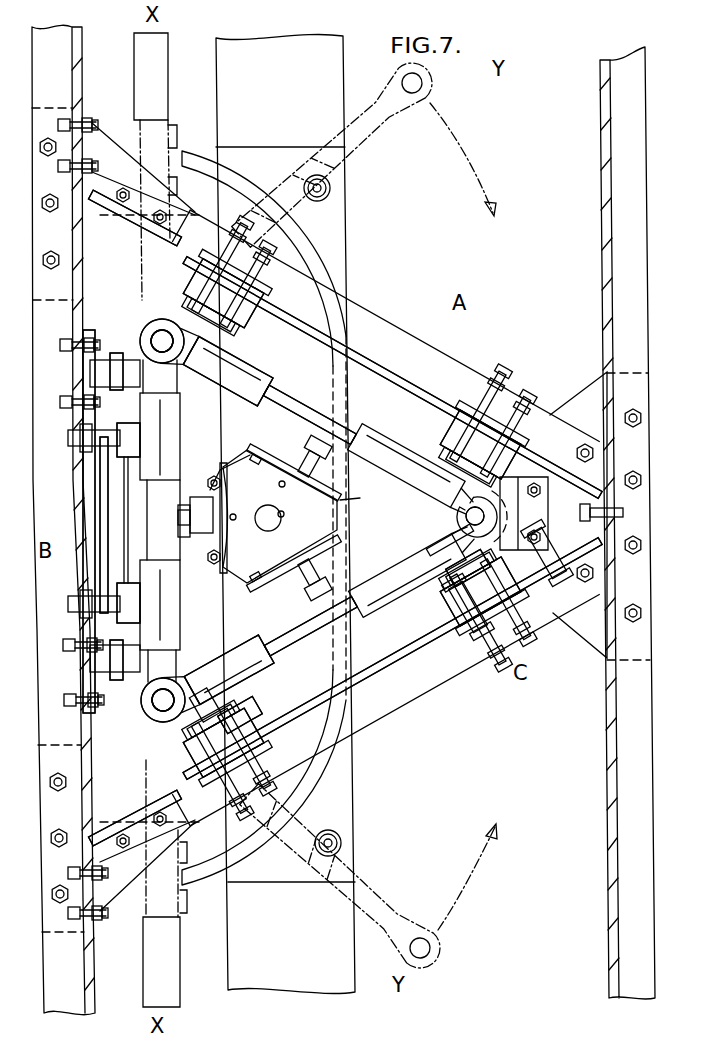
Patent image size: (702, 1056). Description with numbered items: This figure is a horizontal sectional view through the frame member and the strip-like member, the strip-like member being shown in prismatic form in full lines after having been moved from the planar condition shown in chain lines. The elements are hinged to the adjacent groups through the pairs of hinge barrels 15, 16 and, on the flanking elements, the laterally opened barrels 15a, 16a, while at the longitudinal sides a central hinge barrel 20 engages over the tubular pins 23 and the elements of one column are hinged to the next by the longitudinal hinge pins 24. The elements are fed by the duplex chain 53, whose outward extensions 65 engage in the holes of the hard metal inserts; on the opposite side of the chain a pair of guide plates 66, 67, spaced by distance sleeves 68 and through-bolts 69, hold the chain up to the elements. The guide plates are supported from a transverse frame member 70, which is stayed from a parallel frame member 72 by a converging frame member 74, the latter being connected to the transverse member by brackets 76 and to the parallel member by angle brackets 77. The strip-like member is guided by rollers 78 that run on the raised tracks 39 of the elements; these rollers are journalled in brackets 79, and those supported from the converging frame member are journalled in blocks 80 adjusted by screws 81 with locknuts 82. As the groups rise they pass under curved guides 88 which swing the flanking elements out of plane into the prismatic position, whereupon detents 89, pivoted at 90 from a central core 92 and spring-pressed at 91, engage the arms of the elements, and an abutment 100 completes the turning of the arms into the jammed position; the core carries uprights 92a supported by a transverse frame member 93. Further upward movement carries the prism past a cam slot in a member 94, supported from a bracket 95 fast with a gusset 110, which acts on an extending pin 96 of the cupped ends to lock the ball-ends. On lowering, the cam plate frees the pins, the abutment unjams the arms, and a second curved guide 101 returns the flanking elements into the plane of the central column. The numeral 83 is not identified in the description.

The hinge barrel 15 is at (160, 460).
The hinge barrel of flanking element 15a is at (400, 458).
The hinge barrel 16 is at (182, 637).
The hinge barrel of flanking element 16a is at (230, 386).
The central hinge barrel 20 is at (455, 518).
The tubular pin 23 is at (468, 508).
The hinge pin 24 is at (150, 342).
The raised tracks 39 is at (468, 534).
The chain 53 is at (125, 560).
The outward extensions 65 is at (140, 449).
The guide plate 66 is at (70, 431).
The guide plate 67 is at (80, 614).
The distance sleeves 68 is at (86, 470).
The through-bolts 69 is at (101, 502).
The transverse frame member 70 is at (56, 60).
The parallel frame member 72 is at (625, 733).
The converging frame member 74 is at (440, 364).
The brackets 76 is at (88, 118).
The angle brackets 77 is at (612, 520).
The rollers 78 is at (452, 566).
The brackets 79 is at (262, 312).
The blocks 80 is at (262, 268).
The screws 81 is at (240, 245).
The locknuts 82 is at (255, 262).
The threaded rod 83 is at (335, 312).
The curved guides 88 is at (200, 212).
The detents 89 is at (347, 422).
The pivot 90 is at (282, 452).
The spring 91 is at (278, 486).
The central core 92 is at (272, 516).
The uprights 92a is at (250, 455).
The transverse frame member 93 is at (244, 520).
The cam plate 94 is at (508, 530).
The bracket 95 is at (552, 572).
The extending pin 96 is at (512, 610).
The abutment 100 is at (300, 470).
The second curved guide 101 is at (330, 270).
The gusset 110 is at (590, 394).